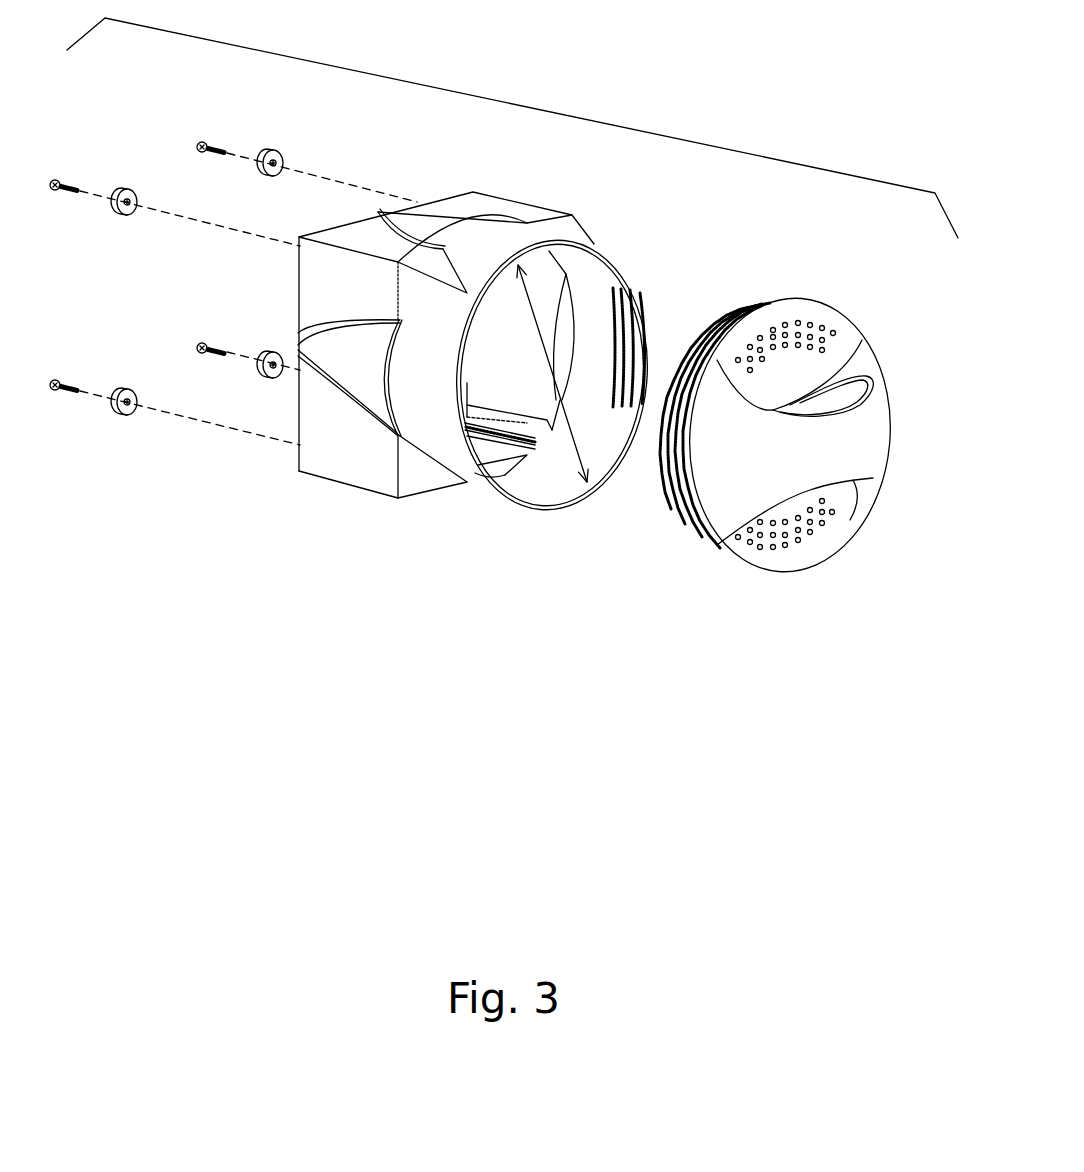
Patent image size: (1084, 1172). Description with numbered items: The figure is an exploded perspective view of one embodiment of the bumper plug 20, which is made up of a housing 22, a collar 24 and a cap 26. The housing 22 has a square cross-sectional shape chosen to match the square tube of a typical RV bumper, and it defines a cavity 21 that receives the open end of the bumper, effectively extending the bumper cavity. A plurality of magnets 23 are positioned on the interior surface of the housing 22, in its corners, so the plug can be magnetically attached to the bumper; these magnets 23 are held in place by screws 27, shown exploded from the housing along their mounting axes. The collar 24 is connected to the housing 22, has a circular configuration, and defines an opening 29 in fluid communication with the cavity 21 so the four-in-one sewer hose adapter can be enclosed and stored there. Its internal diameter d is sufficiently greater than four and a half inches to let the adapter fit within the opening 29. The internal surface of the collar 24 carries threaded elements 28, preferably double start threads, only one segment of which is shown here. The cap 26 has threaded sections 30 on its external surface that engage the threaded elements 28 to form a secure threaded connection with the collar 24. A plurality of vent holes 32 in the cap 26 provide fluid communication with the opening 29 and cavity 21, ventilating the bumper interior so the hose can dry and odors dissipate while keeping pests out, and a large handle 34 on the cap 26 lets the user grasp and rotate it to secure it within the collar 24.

The bumper plug 20 is at (523, 103).
The cavity 21 is at (489, 467).
The housing 22 is at (415, 364).
The magnets 23 is at (118, 213).
The collar 24 is at (530, 500).
The cap 26 is at (892, 393).
The screws 27 is at (57, 180).
The threaded elements 28 is at (633, 333).
The opening 29 is at (617, 327).
The threaded sections 30 is at (713, 441).
The vent holes 32 is at (822, 328).
The handle 34 is at (831, 442).
The internal diameter d is at (574, 394).